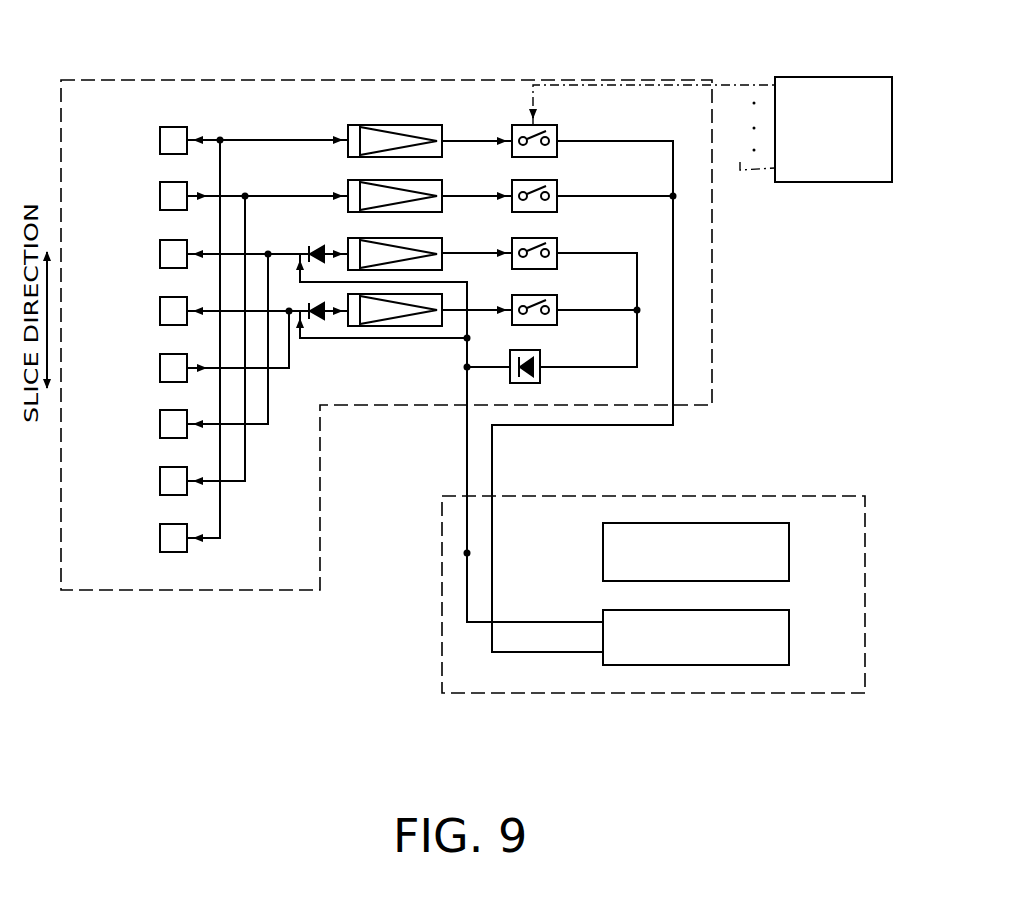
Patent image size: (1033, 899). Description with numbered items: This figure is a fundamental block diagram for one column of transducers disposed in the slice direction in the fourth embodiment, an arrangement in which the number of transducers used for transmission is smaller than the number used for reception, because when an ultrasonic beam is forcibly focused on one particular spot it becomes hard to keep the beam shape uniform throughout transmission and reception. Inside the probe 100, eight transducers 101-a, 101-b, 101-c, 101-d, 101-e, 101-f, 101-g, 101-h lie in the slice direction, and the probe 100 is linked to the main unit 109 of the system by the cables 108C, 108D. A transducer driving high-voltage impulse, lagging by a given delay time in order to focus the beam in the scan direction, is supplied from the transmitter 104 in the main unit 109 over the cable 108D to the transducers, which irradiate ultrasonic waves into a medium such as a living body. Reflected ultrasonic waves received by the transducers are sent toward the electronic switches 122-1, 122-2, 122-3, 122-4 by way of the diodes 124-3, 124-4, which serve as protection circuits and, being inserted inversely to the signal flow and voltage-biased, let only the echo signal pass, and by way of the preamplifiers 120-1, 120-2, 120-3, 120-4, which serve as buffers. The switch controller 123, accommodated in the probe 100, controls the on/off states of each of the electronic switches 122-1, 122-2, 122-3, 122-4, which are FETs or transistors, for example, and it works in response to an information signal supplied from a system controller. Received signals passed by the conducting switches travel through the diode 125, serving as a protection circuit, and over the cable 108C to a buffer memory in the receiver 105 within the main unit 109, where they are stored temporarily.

The probe 100 is at (492, 78).
The first transducer 101-a is at (160, 140).
The transducer 101-b is at (160, 195).
The transducer 101-c is at (160, 253).
The transducer 101-d is at (160, 310).
The transducer 101-e is at (160, 367).
The transducer 101-f is at (160, 423).
The transducer 101-g is at (160, 480).
The eighth transducer 101-h is at (160, 537).
The transmitter 104 is at (790, 561).
The receiver 105 is at (790, 641).
The cable 108C is at (492, 467).
The cable 108D is at (467, 456).
The main unit 109 is at (629, 694).
The preamplifier 120-1 is at (432, 113).
The preamplifier 120-2 is at (403, 168).
The preamplifier 120-3 is at (402, 238).
The preamplifier 120-4 is at (424, 326).
The first electronic switch 122-1 is at (556, 125).
The electronic switch 122-2 is at (557, 188).
The electronic switch 122-3 is at (558, 246).
The electronic switch 122-4 is at (557, 300).
The switch controller 123 is at (855, 183).
The diode 124-3 is at (318, 248).
The diode 124-4 is at (318, 320).
The diode 125 is at (542, 361).